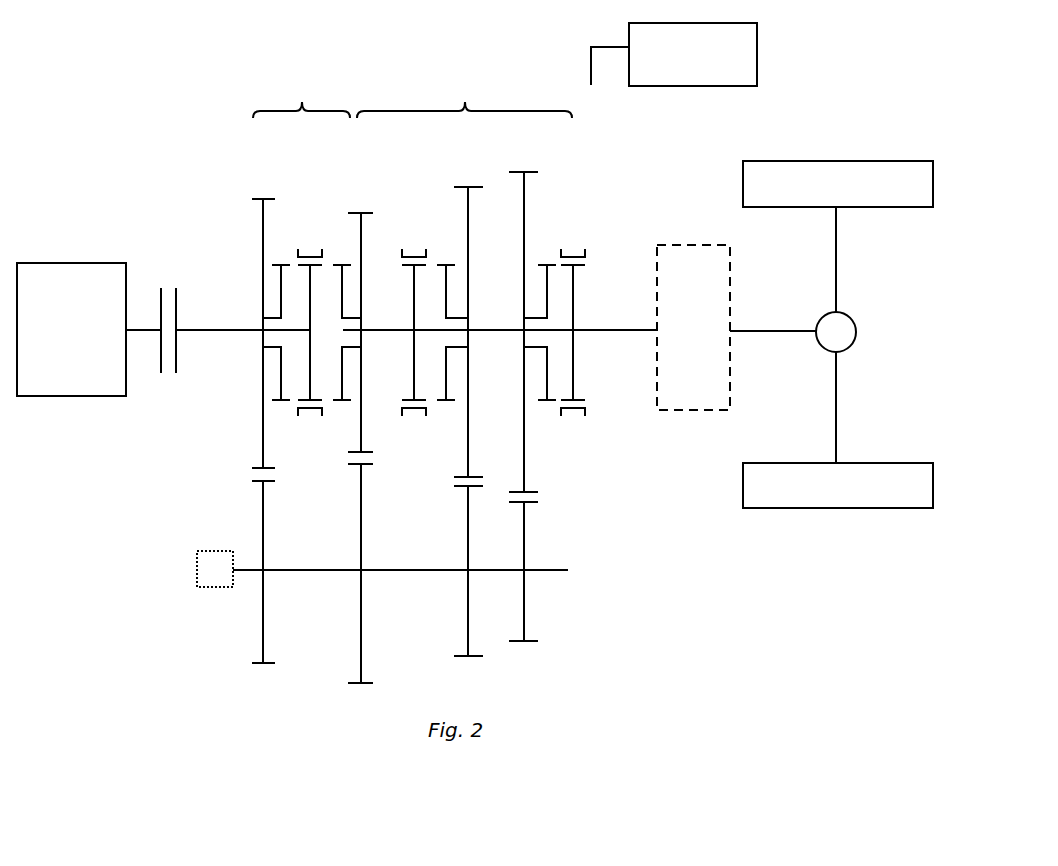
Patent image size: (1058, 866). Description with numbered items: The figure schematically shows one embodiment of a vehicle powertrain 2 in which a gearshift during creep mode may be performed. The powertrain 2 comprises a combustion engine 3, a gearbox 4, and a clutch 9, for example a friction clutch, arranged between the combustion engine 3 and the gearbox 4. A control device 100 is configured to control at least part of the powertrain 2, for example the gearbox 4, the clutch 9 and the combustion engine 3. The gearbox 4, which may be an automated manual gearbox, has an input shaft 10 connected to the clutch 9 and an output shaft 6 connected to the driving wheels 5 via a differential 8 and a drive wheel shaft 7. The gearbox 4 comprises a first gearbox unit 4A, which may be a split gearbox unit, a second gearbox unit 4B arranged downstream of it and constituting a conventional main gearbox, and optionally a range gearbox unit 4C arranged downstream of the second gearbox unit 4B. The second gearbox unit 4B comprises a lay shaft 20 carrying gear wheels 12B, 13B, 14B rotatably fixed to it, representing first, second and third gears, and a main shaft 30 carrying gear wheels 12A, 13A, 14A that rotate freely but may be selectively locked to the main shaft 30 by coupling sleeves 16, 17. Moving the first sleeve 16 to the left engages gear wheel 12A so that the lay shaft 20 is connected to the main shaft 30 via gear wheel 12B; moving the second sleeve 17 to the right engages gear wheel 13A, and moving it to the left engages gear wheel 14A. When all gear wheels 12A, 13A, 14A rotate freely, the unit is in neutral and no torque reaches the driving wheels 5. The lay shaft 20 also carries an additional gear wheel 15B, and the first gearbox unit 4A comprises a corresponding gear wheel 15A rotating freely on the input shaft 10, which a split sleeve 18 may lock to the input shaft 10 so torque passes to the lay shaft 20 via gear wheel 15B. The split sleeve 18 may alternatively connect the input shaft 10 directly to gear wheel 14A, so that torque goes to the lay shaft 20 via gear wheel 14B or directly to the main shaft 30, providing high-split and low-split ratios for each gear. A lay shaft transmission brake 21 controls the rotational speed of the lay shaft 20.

The vehicle powertrain 2 is at (133, 97).
The combustion engine 3 is at (71, 329).
The gearbox 4 is at (656, 554).
The first gearbox unit 4A is at (301, 88).
The second gearbox unit 4B is at (464, 88).
The range gearbox unit 4C is at (693, 327).
The driving wheels 5 is at (825, 177).
The output shaft 6 is at (782, 331).
The drive wheel shaft 7 is at (836, 276).
The differential 8 is at (856, 332).
The clutch 9 is at (177, 297).
The input shaft 10 is at (235, 332).
The gear wheel 12A is at (524, 212).
The gear wheel 12B is at (524, 595).
The gear wheel 13A is at (468, 225).
The gear wheel 13B is at (468, 632).
The gear wheel 14A is at (361, 233).
The gear wheel 14B is at (361, 605).
The gear wheel 15A is at (263, 243).
The additional gear wheel 15B is at (263, 597).
The first sleeve 16 is at (573, 257).
The second sleeve 17 is at (418, 410).
The split sleeve 18 is at (315, 409).
The lay shaft 20 is at (410, 568).
The lay shaft transmission brake 21 is at (197, 573).
The main shaft 30 is at (497, 331).
The control device 100 is at (674, 54).